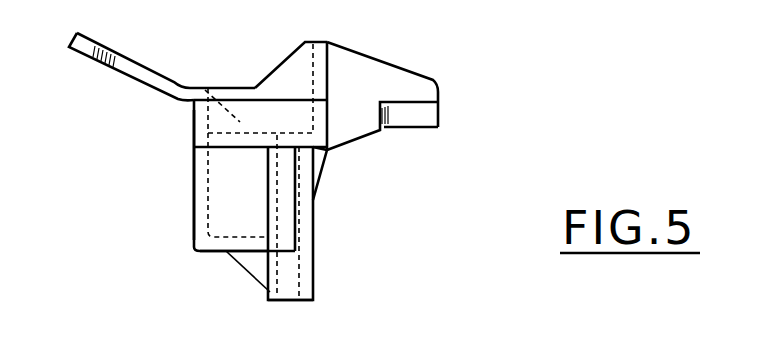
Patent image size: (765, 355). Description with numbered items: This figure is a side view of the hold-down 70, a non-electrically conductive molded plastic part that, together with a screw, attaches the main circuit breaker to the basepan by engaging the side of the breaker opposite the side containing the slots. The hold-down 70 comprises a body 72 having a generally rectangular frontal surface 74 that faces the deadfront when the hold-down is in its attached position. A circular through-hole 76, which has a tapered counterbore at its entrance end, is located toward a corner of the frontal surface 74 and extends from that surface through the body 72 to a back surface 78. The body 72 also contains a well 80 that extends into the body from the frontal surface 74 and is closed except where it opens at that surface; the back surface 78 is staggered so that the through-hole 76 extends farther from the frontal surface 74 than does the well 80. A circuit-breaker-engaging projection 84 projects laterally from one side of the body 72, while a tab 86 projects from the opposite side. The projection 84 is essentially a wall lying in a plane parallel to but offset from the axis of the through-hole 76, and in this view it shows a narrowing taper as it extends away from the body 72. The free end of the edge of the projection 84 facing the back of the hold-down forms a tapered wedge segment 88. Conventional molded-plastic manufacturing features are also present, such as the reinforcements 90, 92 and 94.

The hold-down 70 is at (288, 174).
The body 72 is at (193, 168).
The frontal surface 74 is at (229, 88).
The circular through-hole 76 is at (296, 278).
The back surface 78 is at (207, 251).
The well 80 is at (204, 193).
The circuit-breaker-engaging projection 84 is at (378, 69).
The tab 86 is at (147, 80).
The tapered wedge segment 88 is at (384, 131).
The reinforcement 90 is at (287, 63).
The reinforcement 92 is at (251, 268).
The reinforcement 94 is at (323, 176).